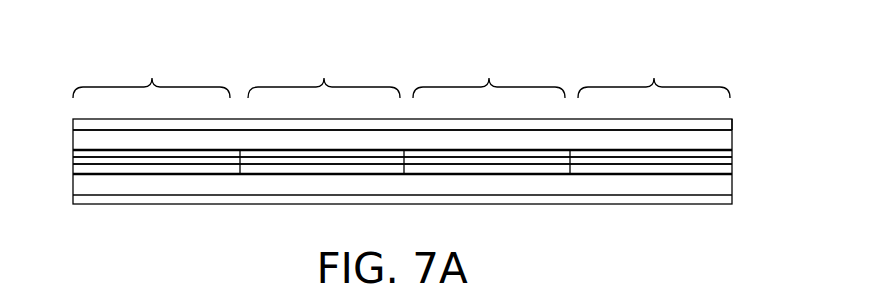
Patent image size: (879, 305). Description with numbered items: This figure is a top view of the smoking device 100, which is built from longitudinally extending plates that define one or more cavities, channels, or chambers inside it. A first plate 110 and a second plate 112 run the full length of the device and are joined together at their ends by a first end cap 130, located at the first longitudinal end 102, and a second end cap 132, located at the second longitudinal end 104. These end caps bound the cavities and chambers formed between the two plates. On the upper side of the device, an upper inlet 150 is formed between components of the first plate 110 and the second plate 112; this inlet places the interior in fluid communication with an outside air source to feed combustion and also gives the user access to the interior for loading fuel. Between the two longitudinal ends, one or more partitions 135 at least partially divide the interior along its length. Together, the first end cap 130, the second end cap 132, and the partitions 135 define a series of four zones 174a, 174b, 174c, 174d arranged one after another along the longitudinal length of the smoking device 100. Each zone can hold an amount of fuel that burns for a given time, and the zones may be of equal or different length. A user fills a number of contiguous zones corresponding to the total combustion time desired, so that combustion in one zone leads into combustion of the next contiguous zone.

The smoking device 100 is at (101, 56).
The first longitudinal end 102 is at (73, 130).
The second longitudinal end 104 is at (733, 137).
The first plate 110 is at (640, 204).
The second plate 112 is at (723, 118).
The first end cap 130 is at (73, 162).
The second end cap 132 is at (733, 158).
The partitions 135 is at (240, 150).
The upper inlet 150 is at (320, 164).
The zone 174a is at (151, 77).
The zone 174b is at (324, 77).
The zone 174c is at (489, 77).
The zone 174d is at (654, 77).